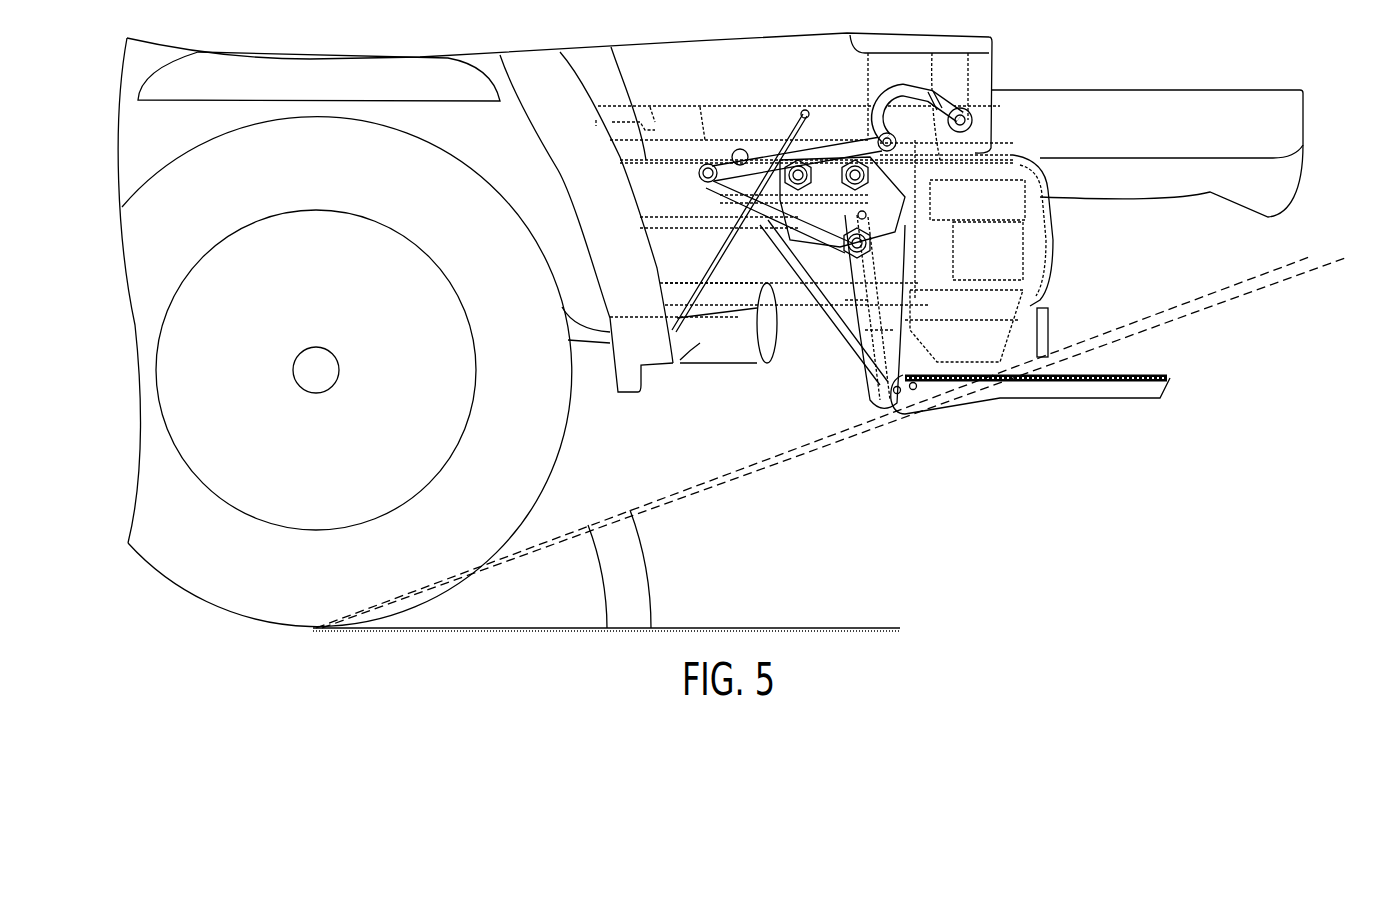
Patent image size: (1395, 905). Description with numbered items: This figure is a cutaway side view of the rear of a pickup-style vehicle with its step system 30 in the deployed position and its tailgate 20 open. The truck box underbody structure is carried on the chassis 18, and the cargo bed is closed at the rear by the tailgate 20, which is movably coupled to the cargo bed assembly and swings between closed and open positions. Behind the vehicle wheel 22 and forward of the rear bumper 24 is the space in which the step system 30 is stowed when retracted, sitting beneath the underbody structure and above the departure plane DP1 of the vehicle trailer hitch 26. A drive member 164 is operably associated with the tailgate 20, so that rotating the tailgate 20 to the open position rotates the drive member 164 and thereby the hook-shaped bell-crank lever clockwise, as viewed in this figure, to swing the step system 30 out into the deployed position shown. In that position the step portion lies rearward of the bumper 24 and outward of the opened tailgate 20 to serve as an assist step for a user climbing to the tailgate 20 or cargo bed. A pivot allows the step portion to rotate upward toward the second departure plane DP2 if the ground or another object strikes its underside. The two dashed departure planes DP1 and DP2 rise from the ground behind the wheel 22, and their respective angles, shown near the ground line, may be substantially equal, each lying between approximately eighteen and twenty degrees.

The chassis 18 is at (611, 47).
The tailgate 20 is at (1172, 105).
The vehicle wheel 22 is at (518, 490).
The rear bumper 24 is at (1048, 233).
The vehicle trailer hitch 26 is at (1048, 328).
The step system 30 is at (856, 418).
The drive member 164 is at (963, 113).
The departure plane DP1 is at (1215, 290).
The departure plane DP2 is at (1257, 285).